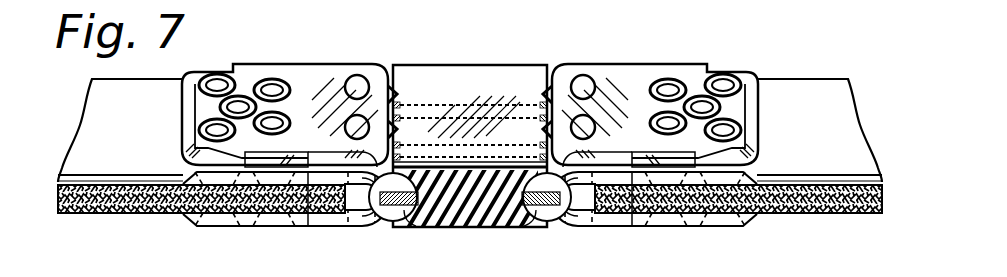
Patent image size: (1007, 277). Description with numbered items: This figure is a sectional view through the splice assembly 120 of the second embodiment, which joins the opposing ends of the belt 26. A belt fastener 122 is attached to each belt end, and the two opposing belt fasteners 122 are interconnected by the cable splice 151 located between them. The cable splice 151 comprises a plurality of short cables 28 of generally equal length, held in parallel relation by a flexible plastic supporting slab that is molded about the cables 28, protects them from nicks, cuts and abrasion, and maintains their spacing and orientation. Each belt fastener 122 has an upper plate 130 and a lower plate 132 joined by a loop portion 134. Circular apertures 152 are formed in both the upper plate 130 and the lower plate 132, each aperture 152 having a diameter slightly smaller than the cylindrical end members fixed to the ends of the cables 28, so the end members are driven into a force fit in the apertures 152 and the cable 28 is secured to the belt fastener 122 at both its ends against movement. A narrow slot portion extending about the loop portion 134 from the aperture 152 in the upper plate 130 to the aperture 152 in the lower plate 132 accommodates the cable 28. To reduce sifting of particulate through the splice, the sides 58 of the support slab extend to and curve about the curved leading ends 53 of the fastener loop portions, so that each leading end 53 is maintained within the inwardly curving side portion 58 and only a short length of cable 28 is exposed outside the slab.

The belt 26 is at (148, 92).
The cable 28 is at (406, 105).
The leading end of the loop portion 53 is at (386, 221).
The side of the support slab 58 is at (408, 218).
The splice assembly 120 is at (556, 57).
The belt fastener 122 is at (318, 78).
The upper plate 130 is at (257, 77).
The lower plate 132 is at (326, 221).
The loop portion 134 is at (397, 82).
The cable splice 151 is at (498, 57).
The circular aperture 152 is at (455, 72).